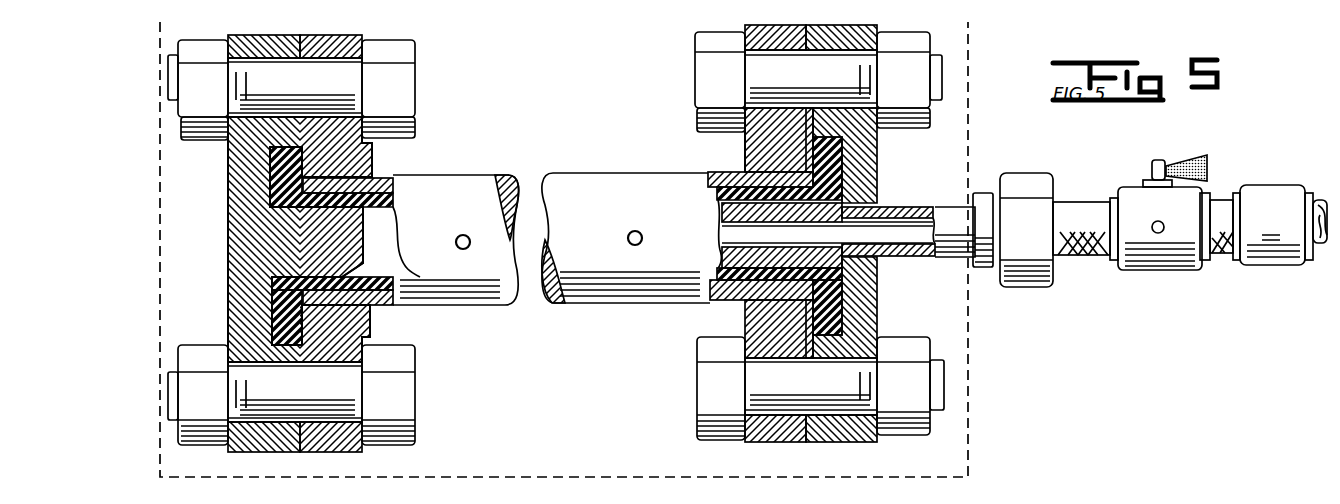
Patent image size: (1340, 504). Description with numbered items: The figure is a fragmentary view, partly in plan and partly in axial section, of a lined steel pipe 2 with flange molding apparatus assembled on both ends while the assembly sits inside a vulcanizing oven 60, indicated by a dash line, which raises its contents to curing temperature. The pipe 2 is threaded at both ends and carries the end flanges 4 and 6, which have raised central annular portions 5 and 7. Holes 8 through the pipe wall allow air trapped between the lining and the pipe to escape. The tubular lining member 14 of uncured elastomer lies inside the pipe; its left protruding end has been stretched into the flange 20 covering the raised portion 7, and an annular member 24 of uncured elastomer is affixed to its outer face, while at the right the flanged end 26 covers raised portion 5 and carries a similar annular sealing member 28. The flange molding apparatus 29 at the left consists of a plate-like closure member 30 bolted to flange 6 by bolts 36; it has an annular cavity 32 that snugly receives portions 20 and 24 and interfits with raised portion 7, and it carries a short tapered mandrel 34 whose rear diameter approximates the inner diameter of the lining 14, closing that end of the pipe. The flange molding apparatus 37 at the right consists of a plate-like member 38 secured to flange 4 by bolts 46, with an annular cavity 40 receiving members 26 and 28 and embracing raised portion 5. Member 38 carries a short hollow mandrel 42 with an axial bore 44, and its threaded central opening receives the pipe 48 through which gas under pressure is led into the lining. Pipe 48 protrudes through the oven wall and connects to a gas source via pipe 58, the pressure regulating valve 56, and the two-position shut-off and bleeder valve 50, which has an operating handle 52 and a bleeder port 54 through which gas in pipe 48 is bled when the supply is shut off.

The pipe 2 is at (460, 175).
The end flange 4 is at (745, 146).
The raised central annular portion 5 is at (810, 165).
The end flange 6 is at (372, 143).
The raised central annular portion 7 is at (330, 176).
The holes 8 is at (468, 249).
The tubular lining member 14 is at (395, 275).
The flange of the lining 20 is at (270, 178).
The annular member 24 is at (278, 310).
The flanged end of the lining 26 is at (845, 148).
The annular sealing member 28 is at (845, 320).
The flange molding apparatus 29 is at (222, 226).
The plate-like closure member 30 is at (245, 237).
The flange molding annular cavity 32 is at (275, 315).
The short mandrel 34 is at (347, 252).
The bolts 36 is at (352, 83).
The flange molding apparatus 37 is at (890, 170).
The plate-like member 38 is at (877, 186).
The annular cavity 40 is at (845, 292).
The short hollow mandrel 42 is at (722, 242).
The bore 44 is at (730, 215).
The bolts 46 is at (855, 70).
The pipe 48 is at (940, 228).
The shut-off and bleeder valve 50 is at (1140, 270).
The operating handle 52 is at (1165, 165).
The bleeder port 54 is at (1160, 232).
The pressure regulating valve 56 is at (1275, 265).
The pipe 58 is at (1325, 245).
The vulcanizing oven 60 is at (500, 477).